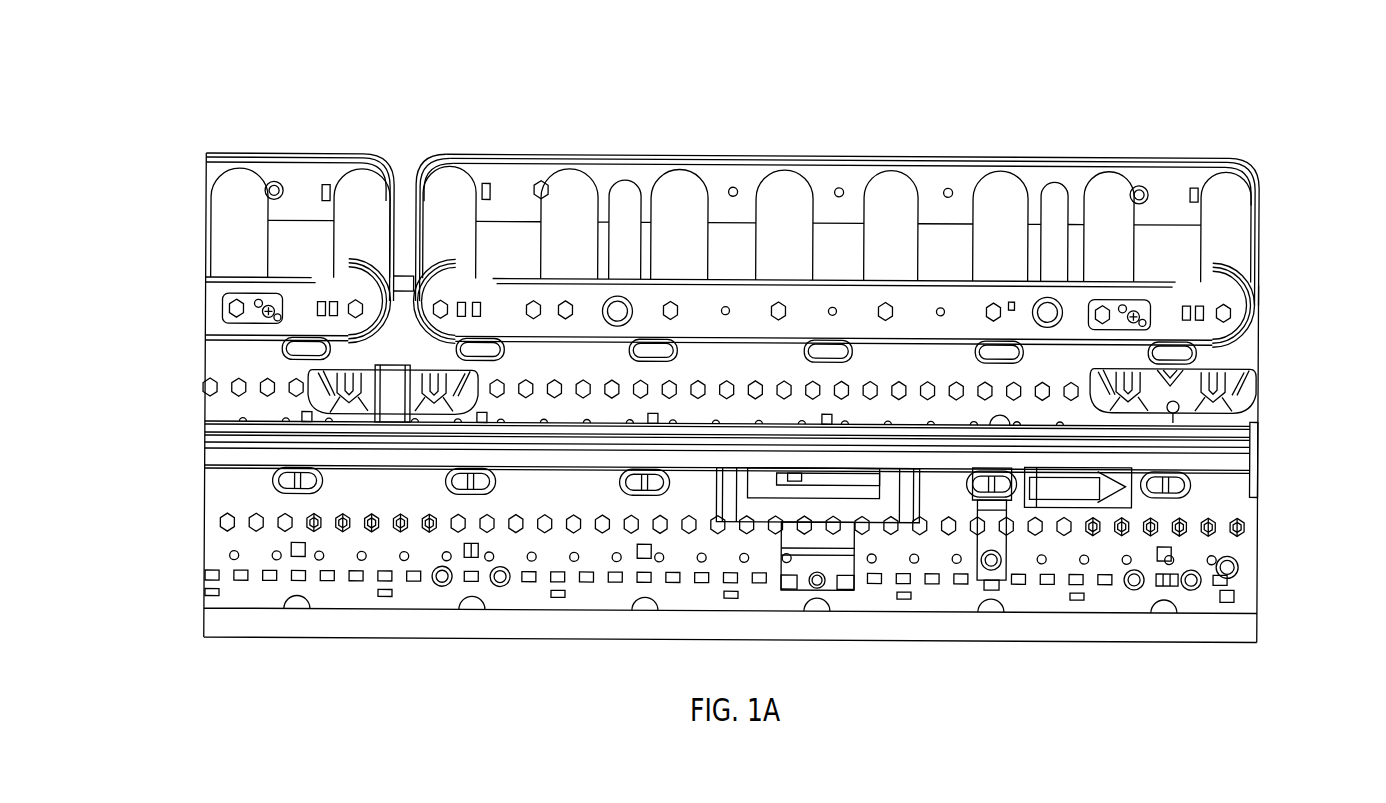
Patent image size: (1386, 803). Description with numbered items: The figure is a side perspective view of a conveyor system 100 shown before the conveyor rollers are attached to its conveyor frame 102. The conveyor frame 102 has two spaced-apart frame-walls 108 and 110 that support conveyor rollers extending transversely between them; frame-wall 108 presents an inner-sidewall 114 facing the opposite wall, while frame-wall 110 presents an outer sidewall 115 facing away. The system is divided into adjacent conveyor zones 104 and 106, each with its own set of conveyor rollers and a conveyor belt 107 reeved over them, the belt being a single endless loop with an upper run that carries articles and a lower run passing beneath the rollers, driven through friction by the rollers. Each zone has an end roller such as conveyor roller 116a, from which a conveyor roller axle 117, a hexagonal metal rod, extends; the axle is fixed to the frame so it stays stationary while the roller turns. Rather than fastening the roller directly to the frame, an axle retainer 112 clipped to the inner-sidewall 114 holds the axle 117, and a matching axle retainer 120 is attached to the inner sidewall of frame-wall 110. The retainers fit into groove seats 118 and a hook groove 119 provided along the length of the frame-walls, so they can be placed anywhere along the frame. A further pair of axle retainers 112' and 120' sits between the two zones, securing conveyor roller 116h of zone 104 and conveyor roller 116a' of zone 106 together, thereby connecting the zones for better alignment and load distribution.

The conveyor system 100 is at (1283, 109).
The conveyor frame 102 is at (1262, 330).
The conveyor zone 104 is at (879, 237).
The conveyor zone 106 is at (328, 228).
The conveyor belt 107 is at (832, 182).
The frame-wall 108 is at (1252, 423).
The frame-wall 110 is at (774, 621).
The axle retainer 112 is at (1224, 393).
The axle retainer 112' is at (298, 374).
The inner-sidewall 114 is at (230, 402).
The outer sidewall 115 is at (1230, 500).
The conveyor roller 116a is at (1271, 227).
The conveyor roller 116a' is at (393, 190).
The conveyor roller 116h is at (440, 183).
The conveyor roller axle 117 is at (1253, 312).
The groove seat 118 is at (1066, 530).
The hook groove 119 is at (1186, 584).
The axle retainer 120 is at (728, 567).
The axle retainer 120' is at (268, 486).